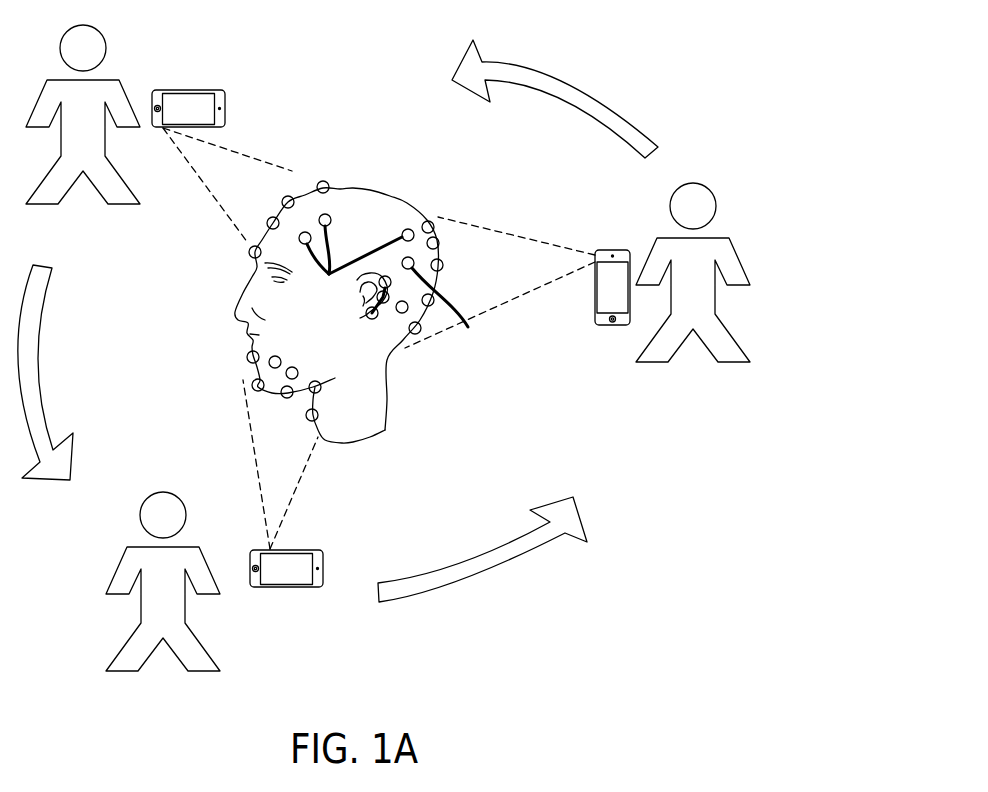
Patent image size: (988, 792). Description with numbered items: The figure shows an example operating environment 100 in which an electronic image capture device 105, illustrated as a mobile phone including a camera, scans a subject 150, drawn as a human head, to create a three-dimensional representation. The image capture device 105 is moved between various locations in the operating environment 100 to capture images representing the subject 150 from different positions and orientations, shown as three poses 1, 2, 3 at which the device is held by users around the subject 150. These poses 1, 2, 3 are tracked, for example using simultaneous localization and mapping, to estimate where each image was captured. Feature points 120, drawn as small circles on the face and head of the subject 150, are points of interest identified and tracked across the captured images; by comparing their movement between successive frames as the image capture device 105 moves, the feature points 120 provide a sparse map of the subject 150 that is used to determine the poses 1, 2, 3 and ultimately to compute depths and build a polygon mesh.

The operating environment 100 is at (617, 80).
The image capture device 105 is at (383, 344).
The feature points 120 is at (367, 301).
The subject 150 is at (390, 195).
The pose 1 is at (305, 592).
The pose 2 is at (612, 249).
The pose 3 is at (193, 88).